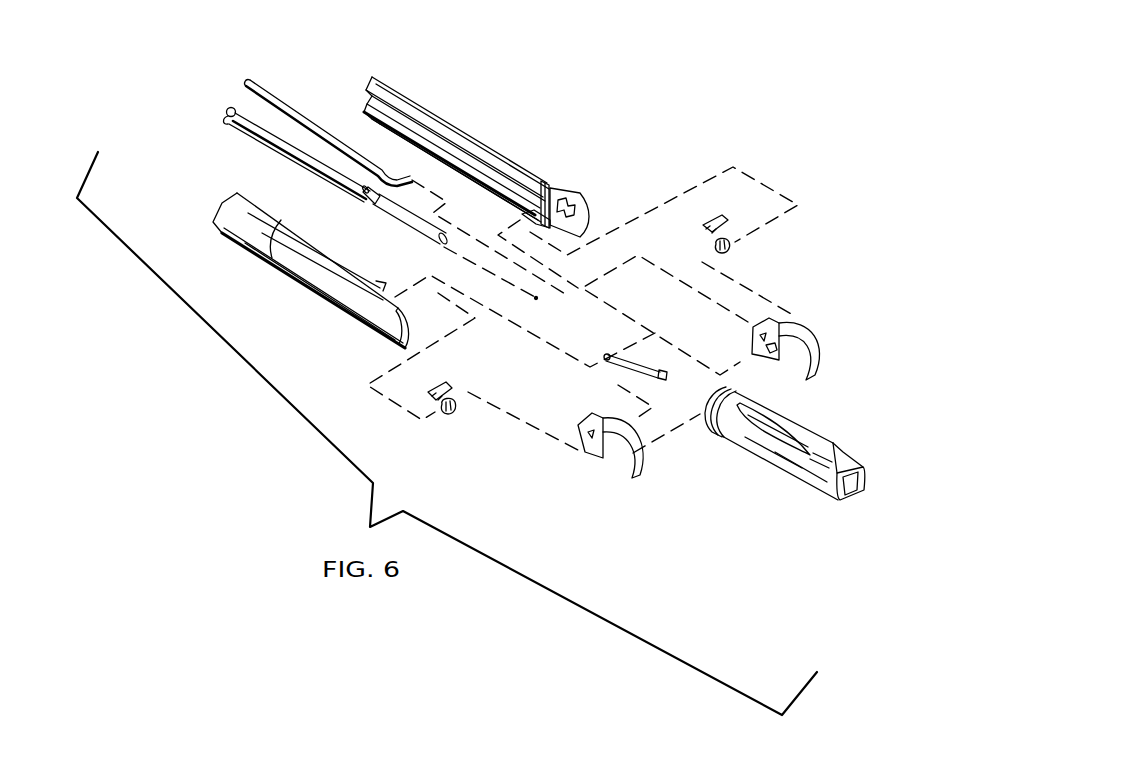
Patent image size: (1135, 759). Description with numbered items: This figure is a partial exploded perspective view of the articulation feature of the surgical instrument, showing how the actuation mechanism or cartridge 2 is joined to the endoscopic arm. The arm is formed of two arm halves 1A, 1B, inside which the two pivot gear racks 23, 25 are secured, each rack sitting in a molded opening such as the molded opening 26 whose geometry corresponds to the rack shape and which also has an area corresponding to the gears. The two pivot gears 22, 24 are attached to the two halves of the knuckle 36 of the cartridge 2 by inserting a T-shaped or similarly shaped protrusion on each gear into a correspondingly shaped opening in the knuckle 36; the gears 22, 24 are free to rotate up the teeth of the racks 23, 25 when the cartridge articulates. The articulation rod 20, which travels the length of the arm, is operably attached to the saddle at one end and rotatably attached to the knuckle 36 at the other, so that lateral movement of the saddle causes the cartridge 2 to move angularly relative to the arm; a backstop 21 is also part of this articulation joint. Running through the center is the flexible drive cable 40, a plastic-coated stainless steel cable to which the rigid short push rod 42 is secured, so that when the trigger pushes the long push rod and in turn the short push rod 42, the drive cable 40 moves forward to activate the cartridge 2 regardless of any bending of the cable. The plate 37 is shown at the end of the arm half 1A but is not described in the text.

The arm half 1A is at (438, 116).
The arm half 1B is at (288, 277).
The actuation mechanism 2 is at (882, 423).
The articulation rod 20 is at (262, 84).
The backstop 21 is at (660, 374).
The pivot gear 22 is at (732, 247).
The pivot gear rack 23 is at (710, 217).
The pivot gear 24 is at (439, 412).
The pivot gear rack 25 is at (450, 388).
The molded opening 26 is at (567, 203).
The knuckle 36 is at (802, 338).
The plate 37 is at (550, 192).
The drive cable 40 is at (397, 215).
The short push rod 42 is at (243, 121).